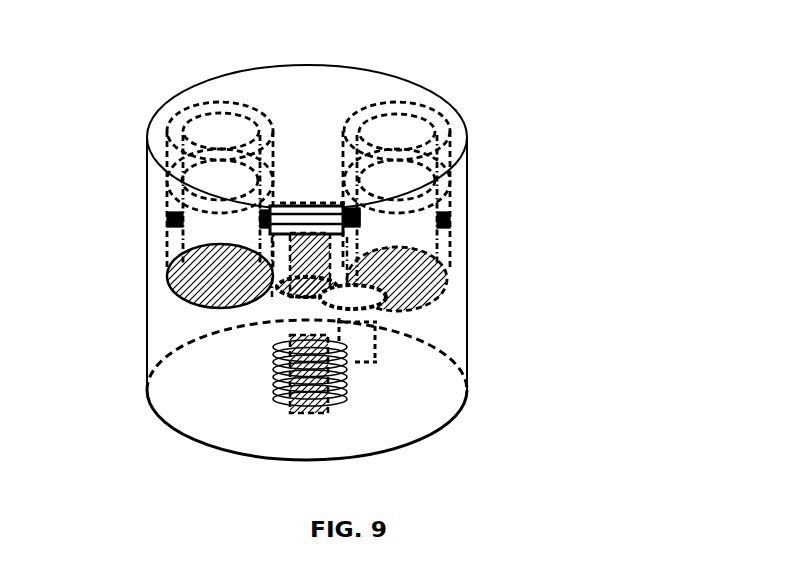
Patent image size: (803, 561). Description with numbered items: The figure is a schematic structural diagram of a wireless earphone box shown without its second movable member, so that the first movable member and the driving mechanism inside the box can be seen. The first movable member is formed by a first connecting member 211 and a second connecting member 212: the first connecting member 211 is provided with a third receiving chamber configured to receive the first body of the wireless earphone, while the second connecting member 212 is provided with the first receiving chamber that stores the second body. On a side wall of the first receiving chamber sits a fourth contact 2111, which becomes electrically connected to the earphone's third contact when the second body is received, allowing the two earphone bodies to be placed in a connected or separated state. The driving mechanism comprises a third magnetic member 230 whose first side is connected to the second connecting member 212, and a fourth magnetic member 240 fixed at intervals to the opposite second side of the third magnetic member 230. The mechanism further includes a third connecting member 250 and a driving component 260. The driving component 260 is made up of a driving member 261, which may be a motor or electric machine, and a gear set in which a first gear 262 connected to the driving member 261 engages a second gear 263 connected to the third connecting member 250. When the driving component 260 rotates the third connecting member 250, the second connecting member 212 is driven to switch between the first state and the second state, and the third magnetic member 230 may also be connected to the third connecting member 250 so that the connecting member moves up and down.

The first connecting member 211 is at (400, 138).
The second connecting member 212 is at (400, 233).
The fourth contact 2111 is at (176, 217).
The third magnetic member 230 is at (298, 260).
The fourth magnetic member 240 is at (288, 393).
The third connecting member 250 is at (316, 222).
The driving component 260 is at (456, 285).
The driving member 261 is at (365, 343).
The first gear 262 is at (355, 295).
The second gear 263 is at (327, 277).